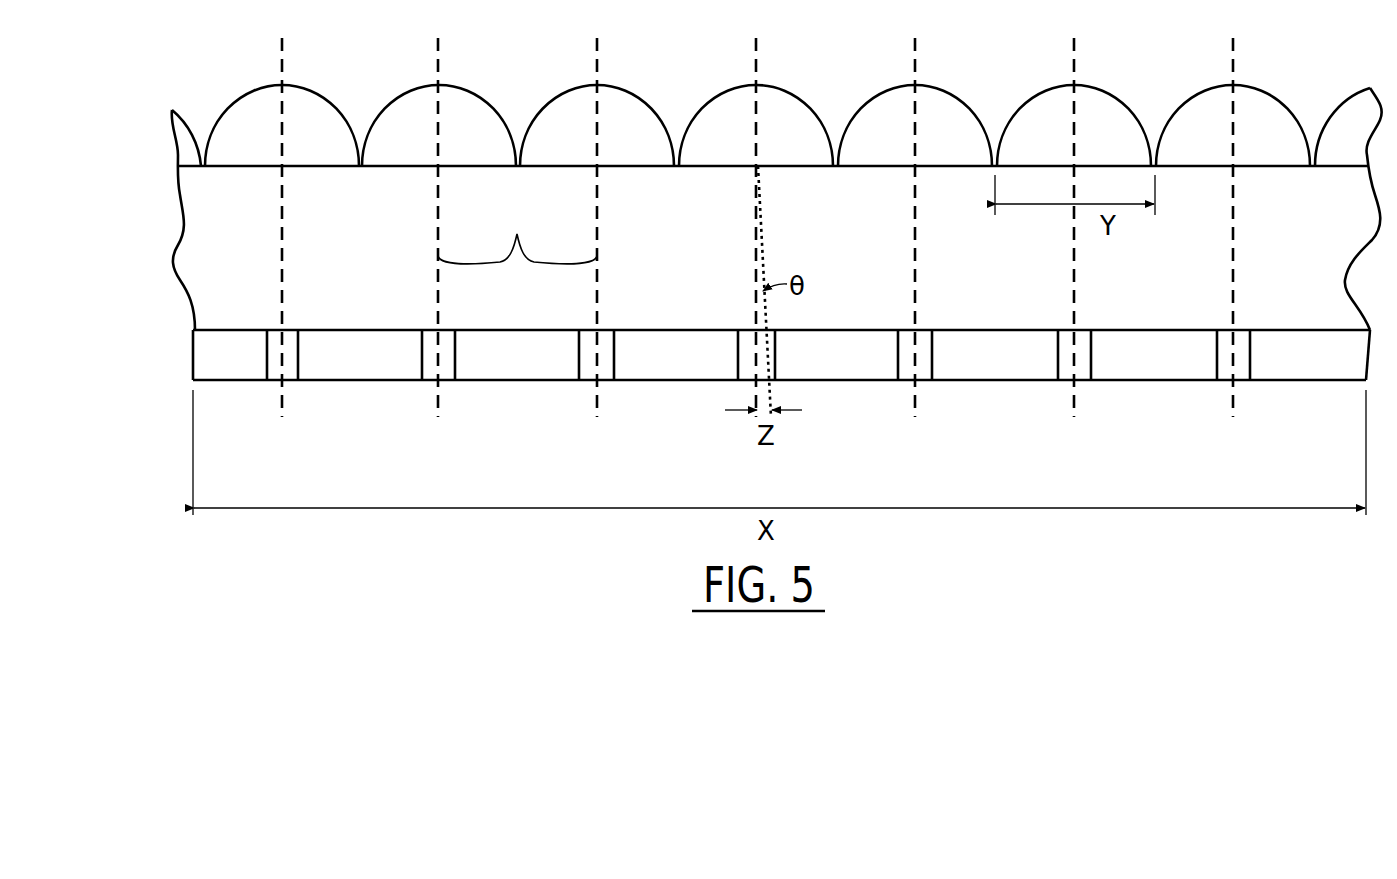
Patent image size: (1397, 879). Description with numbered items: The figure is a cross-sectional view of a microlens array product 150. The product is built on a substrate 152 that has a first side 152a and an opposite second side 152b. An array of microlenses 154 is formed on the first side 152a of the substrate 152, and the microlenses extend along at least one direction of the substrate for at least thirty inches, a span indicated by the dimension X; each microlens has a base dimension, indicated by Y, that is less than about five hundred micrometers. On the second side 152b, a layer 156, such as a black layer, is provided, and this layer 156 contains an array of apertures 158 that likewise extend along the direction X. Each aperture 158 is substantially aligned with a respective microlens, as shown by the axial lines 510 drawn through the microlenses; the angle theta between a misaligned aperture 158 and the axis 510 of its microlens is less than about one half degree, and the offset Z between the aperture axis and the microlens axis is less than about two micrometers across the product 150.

The microlens array product 150 is at (115, 175).
The array of microlenses 154 is at (252, 128).
The substrate 152 is at (215, 248).
The first side of the substrate 152a is at (305, 172).
The second side of the substrate 152b is at (411, 328).
The layer 156 is at (504, 358).
The apertures 158 is at (447, 372).
The axial lines 510 is at (517, 230).